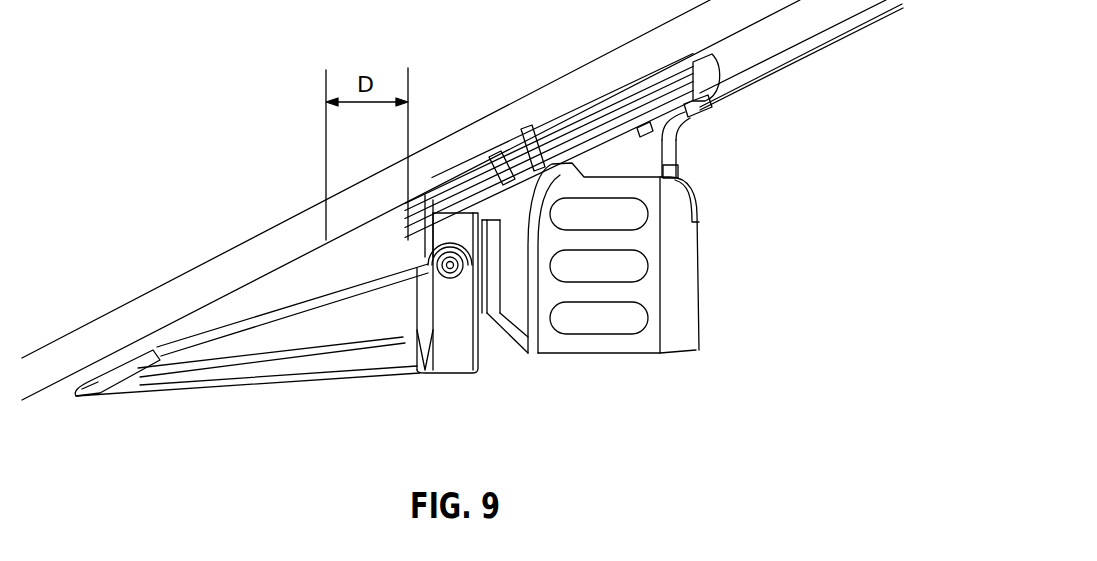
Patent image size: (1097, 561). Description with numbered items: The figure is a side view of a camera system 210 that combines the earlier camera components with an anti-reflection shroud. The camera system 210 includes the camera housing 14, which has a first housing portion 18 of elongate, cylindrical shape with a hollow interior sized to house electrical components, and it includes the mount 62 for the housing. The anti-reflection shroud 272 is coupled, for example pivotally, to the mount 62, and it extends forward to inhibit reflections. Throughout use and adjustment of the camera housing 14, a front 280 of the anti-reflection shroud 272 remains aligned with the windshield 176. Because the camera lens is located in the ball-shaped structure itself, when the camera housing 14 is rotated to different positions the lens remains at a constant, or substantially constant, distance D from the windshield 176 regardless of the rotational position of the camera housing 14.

The camera system 210 is at (200, 176).
The windshield 176 is at (596, 108).
The mount 62 is at (493, 146).
The camera housing 14 is at (716, 209).
The first housing portion 18 is at (632, 367).
The anti-reflection shroud 272 is at (262, 356).
The front 280 is at (167, 368).